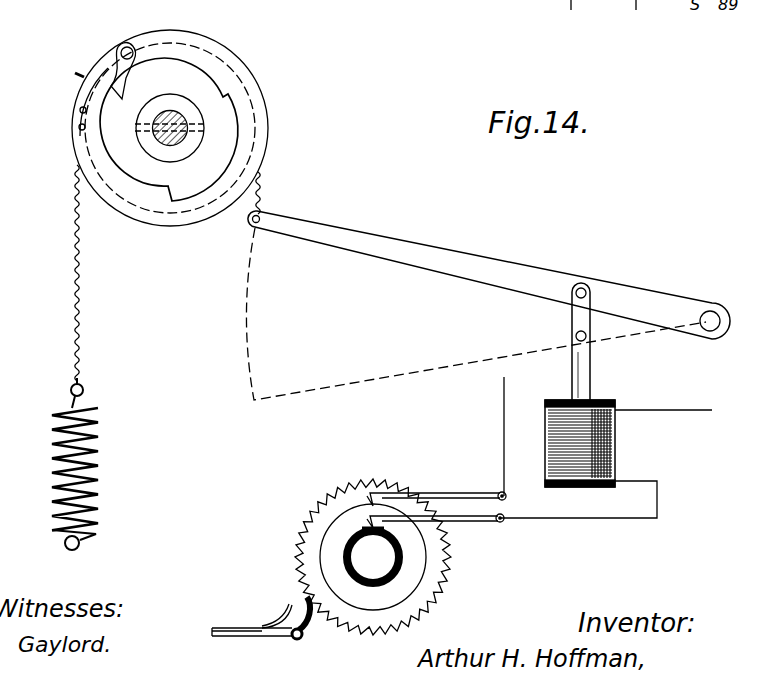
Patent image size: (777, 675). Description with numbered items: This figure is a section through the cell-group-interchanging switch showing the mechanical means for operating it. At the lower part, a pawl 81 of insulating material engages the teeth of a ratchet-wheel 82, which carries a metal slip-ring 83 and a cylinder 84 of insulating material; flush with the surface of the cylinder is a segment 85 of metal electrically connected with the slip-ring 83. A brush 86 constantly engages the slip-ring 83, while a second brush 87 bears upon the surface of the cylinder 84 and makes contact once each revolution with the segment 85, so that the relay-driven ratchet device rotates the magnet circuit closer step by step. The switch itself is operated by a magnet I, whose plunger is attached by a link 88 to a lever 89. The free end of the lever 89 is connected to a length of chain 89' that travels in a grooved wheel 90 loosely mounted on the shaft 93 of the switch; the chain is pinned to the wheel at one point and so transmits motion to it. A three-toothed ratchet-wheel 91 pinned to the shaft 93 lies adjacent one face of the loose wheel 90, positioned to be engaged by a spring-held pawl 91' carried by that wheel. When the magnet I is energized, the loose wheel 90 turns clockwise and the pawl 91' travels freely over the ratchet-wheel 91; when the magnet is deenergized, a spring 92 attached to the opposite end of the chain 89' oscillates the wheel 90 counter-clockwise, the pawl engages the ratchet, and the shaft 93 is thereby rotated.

The pawl 81 is at (305, 612).
The ratchet-wheel 82 is at (442, 591).
The slip-ring 83 is at (332, 557).
The cylinder 84 is at (352, 540).
The segment 85 is at (372, 529).
The brush 86 is at (466, 493).
The brush 87 is at (474, 522).
The link 88 is at (574, 319).
The lever 89 is at (488, 303).
The chain 89' is at (139, 273).
The grooved wheel 90 is at (258, 108).
The three-toothed ratchet-wheel 91 is at (169, 129).
The spring-held pawl 91' is at (102, 80).
The spring 92 is at (52, 446).
The shaft 93 is at (163, 138).
The magnet I is at (615, 448).